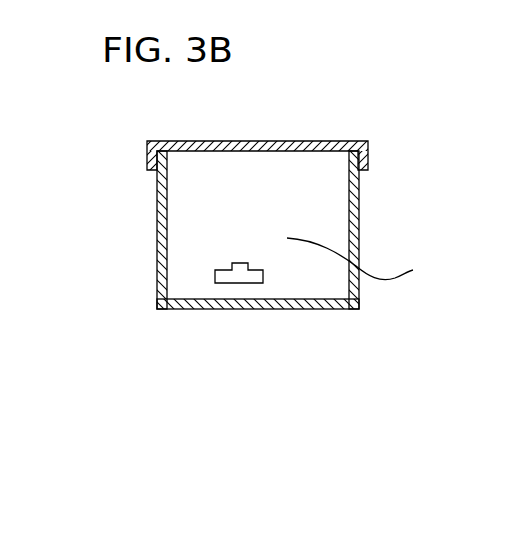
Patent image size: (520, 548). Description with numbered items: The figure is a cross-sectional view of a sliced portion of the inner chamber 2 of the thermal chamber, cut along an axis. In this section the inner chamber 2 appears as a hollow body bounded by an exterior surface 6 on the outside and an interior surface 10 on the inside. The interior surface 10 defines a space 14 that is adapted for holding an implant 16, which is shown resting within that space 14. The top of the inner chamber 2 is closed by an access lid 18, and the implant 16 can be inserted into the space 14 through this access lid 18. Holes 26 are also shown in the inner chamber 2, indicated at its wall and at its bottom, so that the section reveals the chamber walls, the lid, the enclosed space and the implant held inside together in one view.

The inner chamber 2 is at (422, 173).
The exterior surface 6 is at (157, 263).
The interior surface 10 is at (162, 240).
The space 14 is at (372, 261).
The implant 16 is at (265, 274).
The access lid 18 is at (294, 141).
The holes 26 is at (360, 228).